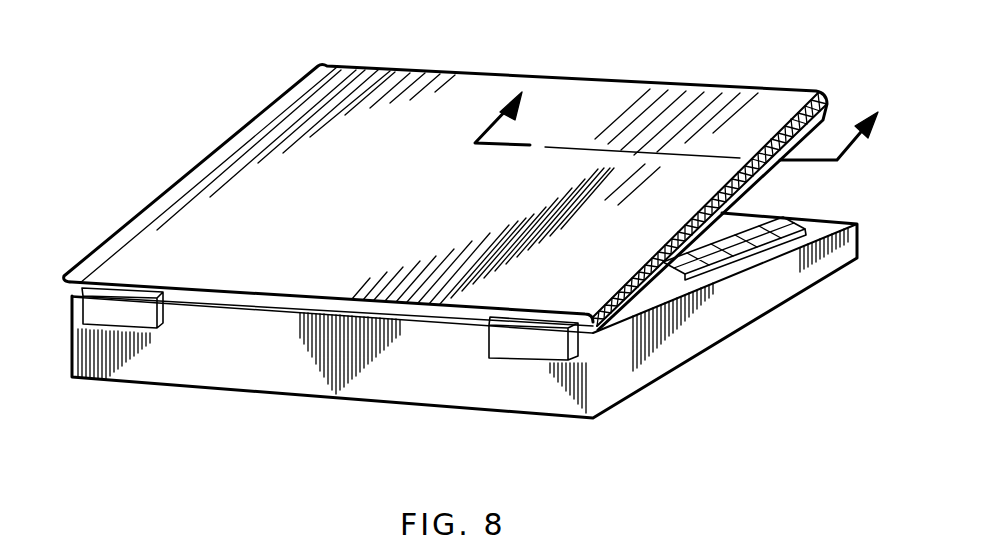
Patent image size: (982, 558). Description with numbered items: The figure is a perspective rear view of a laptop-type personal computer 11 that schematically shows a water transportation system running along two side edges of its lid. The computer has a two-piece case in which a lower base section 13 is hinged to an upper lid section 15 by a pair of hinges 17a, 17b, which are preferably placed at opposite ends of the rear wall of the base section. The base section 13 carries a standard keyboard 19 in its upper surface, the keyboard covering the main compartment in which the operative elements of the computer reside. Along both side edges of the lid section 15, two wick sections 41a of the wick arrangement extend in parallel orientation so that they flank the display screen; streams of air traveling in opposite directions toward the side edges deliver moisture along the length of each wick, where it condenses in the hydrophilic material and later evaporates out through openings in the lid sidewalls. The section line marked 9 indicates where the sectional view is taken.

The personal computer 11 is at (237, 114).
The lid section 15 is at (675, 93).
The wick section 41a is at (793, 97).
The base section 13 is at (742, 305).
The keyboard 19 is at (747, 242).
The hinge 17a is at (525, 350).
The hinge 17b is at (148, 320).
The section line 9- 9 is at (685, 98).